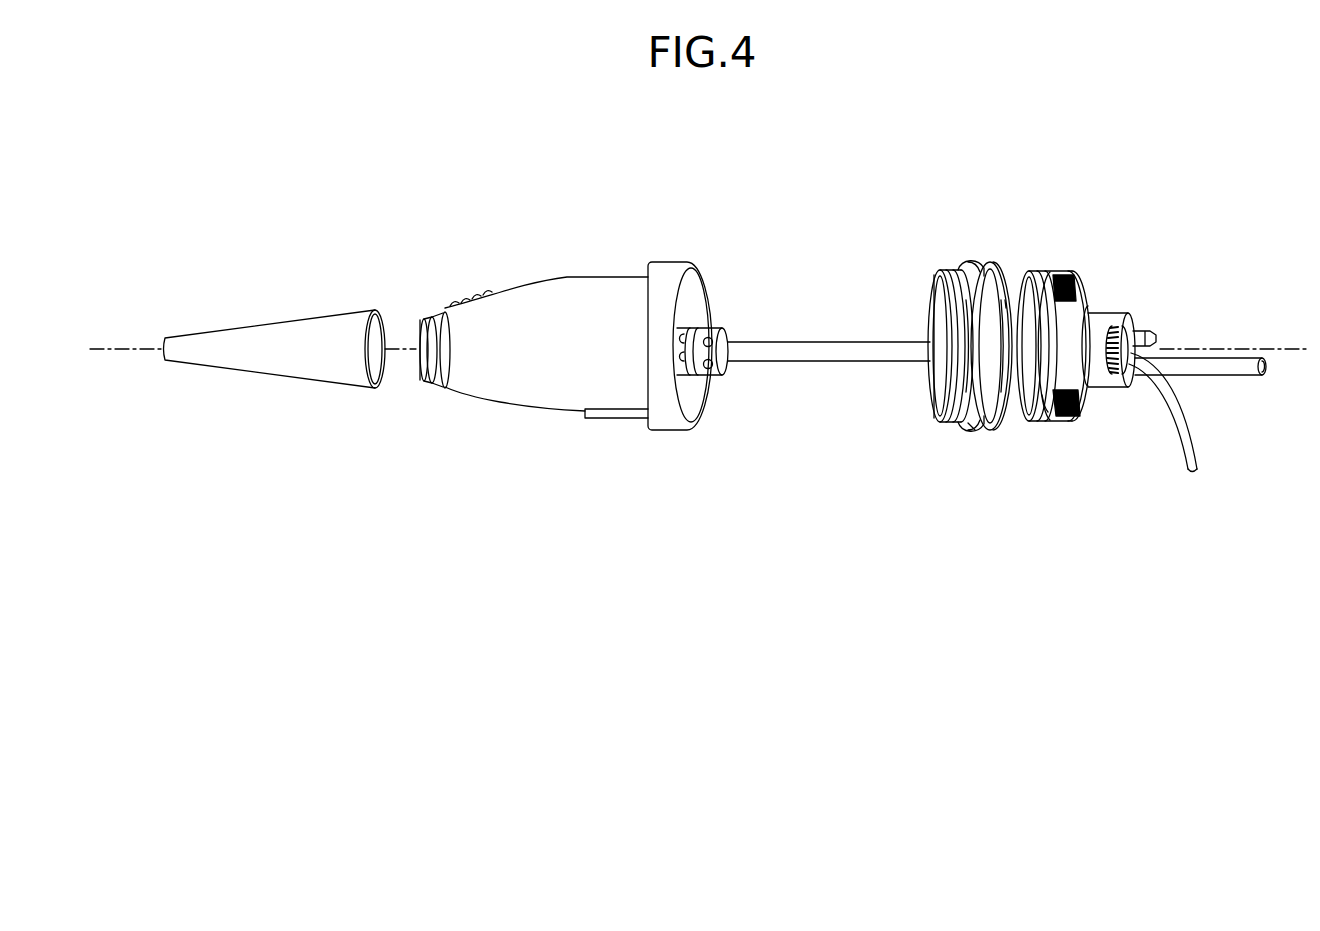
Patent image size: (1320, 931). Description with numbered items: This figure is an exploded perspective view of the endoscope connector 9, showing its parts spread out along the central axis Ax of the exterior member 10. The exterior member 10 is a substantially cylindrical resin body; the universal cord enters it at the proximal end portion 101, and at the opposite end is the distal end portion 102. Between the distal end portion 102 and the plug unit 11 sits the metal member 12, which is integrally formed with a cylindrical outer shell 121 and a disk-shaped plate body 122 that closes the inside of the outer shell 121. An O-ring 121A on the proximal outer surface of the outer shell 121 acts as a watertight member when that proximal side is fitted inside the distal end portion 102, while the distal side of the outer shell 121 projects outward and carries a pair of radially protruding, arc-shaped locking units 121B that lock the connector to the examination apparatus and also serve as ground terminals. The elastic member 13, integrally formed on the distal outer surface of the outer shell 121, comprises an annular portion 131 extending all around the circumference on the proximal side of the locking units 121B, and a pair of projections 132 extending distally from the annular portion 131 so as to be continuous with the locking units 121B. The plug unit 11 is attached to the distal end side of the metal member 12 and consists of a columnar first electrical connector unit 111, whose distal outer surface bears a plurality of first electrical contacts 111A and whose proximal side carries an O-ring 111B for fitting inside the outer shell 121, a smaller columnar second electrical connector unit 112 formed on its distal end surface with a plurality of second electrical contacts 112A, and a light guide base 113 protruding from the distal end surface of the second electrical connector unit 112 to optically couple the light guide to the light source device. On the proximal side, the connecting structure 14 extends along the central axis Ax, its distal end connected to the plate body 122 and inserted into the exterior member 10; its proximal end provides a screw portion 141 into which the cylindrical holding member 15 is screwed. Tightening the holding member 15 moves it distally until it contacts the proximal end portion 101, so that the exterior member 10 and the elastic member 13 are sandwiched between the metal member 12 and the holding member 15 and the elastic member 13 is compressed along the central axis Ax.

The endoscope connector 9 is at (770, 160).
The exterior member 10 is at (531, 396).
The plug unit 11 is at (1141, 396).
The metal member 12 is at (923, 355).
The elastic member 13 is at (963, 380).
The connecting structure 14 is at (788, 345).
The holding member 15 is at (313, 360).
The proximal end portion 101 is at (432, 402).
The distal end portion 102 is at (678, 439).
The first electrical connector unit 111 is at (1094, 301).
The first electrical contacts 111A is at (1097, 303).
The O-ring 111B is at (1050, 415).
The second electrical connector unit 112 is at (1140, 321).
The second electrical contacts 112A is at (1193, 420).
The light guide base 113 is at (1200, 371).
The outer shell 121 is at (930, 392).
The O-ring 121A is at (942, 304).
The locking units 121B is at (988, 262).
The plate body 122 is at (1005, 302).
The annular portion 131 is at (969, 425).
The projections 132 is at (1010, 300).
The screw portion 141 is at (716, 327).
The central axis Ax is at (127, 346).